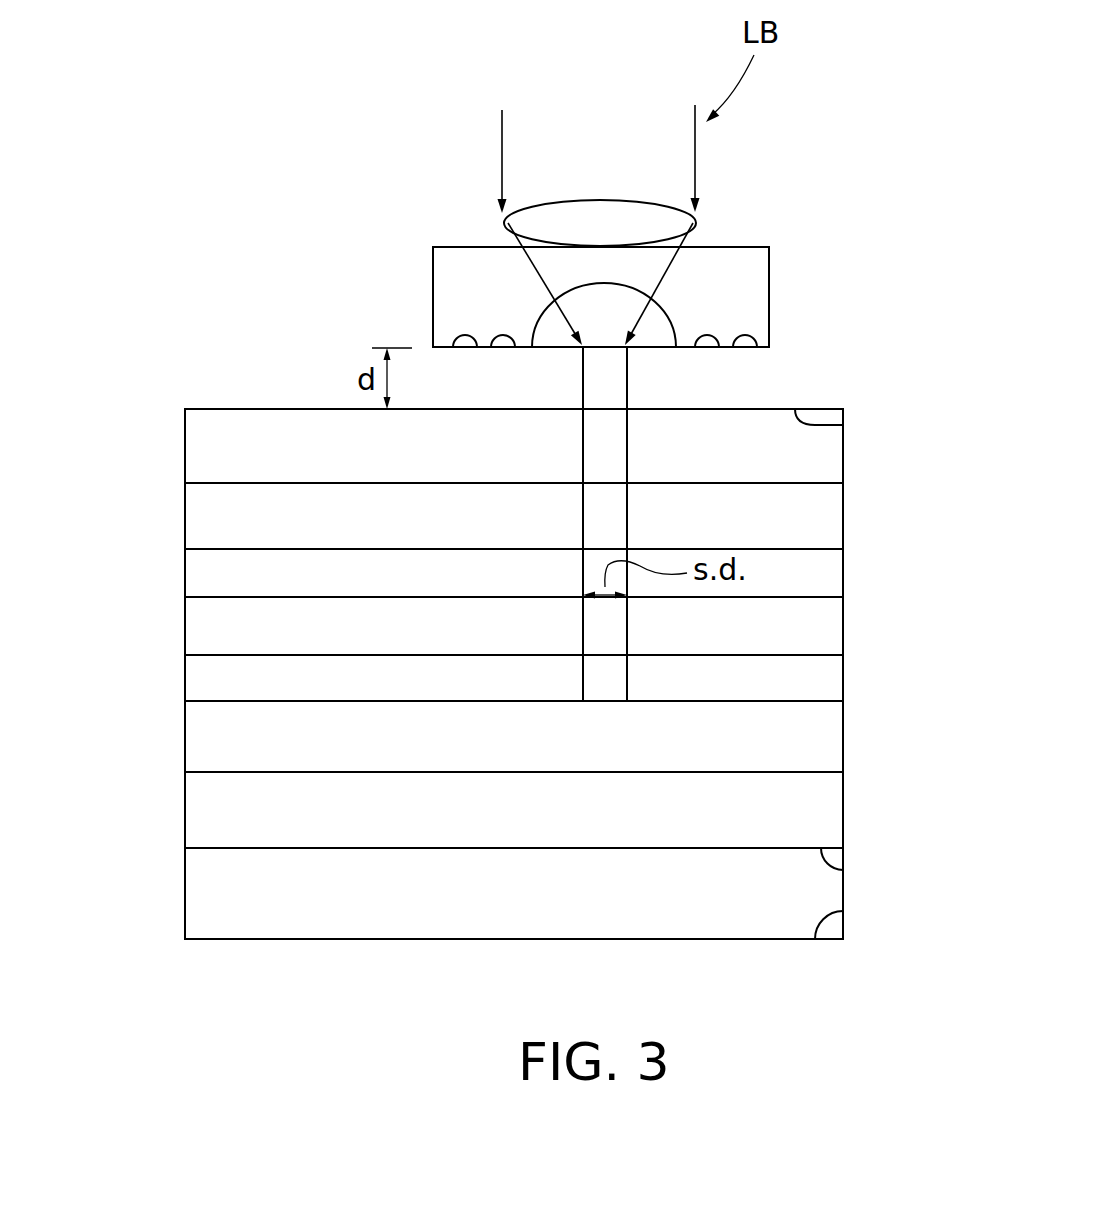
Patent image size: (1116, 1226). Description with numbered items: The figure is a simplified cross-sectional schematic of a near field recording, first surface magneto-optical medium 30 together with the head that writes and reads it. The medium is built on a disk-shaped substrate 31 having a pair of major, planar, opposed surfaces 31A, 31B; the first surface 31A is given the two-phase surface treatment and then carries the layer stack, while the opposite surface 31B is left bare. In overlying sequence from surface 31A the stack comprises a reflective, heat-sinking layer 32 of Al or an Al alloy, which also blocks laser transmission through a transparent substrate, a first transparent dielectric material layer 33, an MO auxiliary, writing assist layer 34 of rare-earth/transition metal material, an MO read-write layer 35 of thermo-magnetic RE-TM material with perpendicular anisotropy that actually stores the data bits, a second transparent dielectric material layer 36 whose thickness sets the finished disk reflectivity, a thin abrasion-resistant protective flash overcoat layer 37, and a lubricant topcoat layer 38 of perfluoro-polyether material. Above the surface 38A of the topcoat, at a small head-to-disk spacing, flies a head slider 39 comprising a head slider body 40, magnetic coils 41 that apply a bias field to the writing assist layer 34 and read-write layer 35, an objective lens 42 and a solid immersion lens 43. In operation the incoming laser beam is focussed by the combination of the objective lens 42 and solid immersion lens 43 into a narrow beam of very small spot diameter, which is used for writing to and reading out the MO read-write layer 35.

The LGMO medium 30 is at (132, 324).
The substrate 31 is at (547, 915).
The first major surface of substrate 31A is at (843, 866).
The second major surface of substrate 31B is at (843, 912).
The reflective, heat-sinking layer 32 is at (818, 813).
The first dielectric material layer 33 is at (827, 740).
The MO auxiliary, writing assist layer 34 is at (830, 677).
The MO read-write layer 35 is at (830, 627).
The second dielectric material layer 36 is at (827, 575).
The protective flash overcoat layer 37 is at (813, 513).
The lubricant topcoat layer 38 is at (808, 454).
The surface of lubricant topcoat layer 38A is at (843, 424).
The head slider 39 is at (815, 198).
The head slider body 40 is at (758, 270).
The magnetic coils 41 is at (708, 350).
The objective lens 42 is at (628, 222).
The solid immersion lens 43 is at (650, 327).